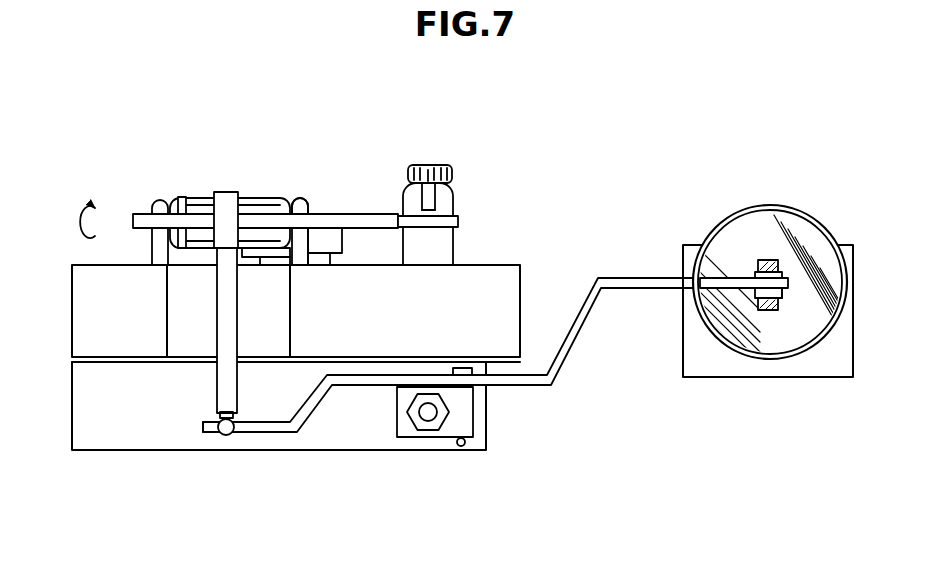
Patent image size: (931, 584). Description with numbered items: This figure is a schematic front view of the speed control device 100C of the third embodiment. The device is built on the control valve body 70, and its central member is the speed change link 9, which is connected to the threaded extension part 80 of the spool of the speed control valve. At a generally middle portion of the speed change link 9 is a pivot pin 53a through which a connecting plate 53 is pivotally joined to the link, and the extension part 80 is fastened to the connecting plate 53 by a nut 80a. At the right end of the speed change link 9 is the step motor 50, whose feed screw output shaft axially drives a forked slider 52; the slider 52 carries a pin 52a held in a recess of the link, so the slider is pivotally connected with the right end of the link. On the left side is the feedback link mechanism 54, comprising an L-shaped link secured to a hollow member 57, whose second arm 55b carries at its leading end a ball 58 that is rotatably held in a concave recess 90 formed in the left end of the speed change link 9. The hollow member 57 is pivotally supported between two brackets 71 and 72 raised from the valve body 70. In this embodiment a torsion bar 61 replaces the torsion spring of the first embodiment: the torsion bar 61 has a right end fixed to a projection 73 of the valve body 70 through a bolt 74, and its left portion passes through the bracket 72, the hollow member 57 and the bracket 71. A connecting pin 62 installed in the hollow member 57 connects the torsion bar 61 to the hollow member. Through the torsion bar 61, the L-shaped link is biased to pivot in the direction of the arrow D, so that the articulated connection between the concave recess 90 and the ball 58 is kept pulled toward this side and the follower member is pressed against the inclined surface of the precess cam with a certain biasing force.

The speed control device 100C is at (603, 102).
The speed change link 9 is at (635, 277).
The step motor 50 is at (795, 206).
The forked slider 52 is at (768, 310).
The pin 52a is at (781, 294).
The connecting plate 53 is at (467, 420).
The pivot pin 53a is at (463, 448).
The feedback link mechanism 54 is at (214, 190).
The second arm 55b is at (217, 333).
The hollow member 57 is at (263, 198).
The ball 58 is at (228, 437).
The torsion bar 61 is at (360, 213).
The connecting pin 62 is at (182, 198).
The control valve body 70 is at (520, 290).
The bracket 71 is at (150, 248).
The bracket 72 is at (302, 200).
The projection 73 is at (455, 243).
The bolt 74 is at (438, 167).
The extension part 80 is at (428, 422).
The nut 80a is at (410, 420).
The concave recess 90 is at (203, 433).
The arrow D is at (80, 222).